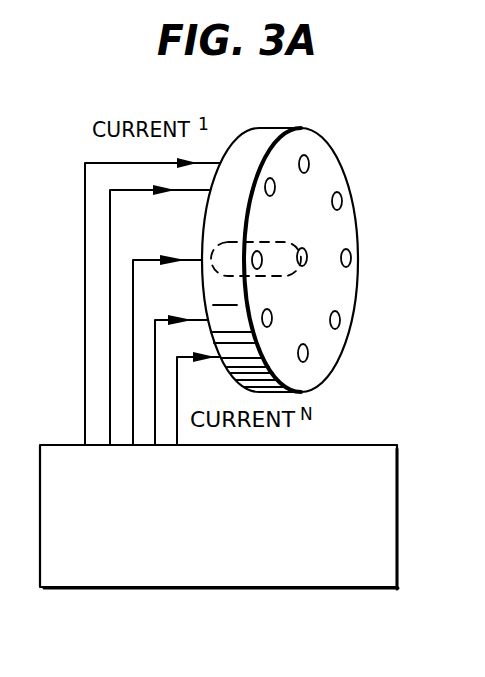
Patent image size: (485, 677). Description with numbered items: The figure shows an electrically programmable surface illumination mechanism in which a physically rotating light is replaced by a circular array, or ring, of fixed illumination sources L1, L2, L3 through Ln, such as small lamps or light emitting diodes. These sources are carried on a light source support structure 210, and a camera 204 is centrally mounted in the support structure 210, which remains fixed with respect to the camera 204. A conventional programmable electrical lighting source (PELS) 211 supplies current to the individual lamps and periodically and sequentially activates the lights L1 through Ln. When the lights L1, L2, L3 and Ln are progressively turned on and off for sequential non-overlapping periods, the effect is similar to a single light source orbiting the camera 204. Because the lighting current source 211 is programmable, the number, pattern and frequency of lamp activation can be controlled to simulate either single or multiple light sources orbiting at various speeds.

The fixed illumination source Ln is at (271, 180).
The fixed illumination source L1 is at (308, 162).
The fixed illumination source L2 is at (341, 200).
The fixed illumination source L3 is at (350, 258).
The camera 204 is at (308, 255).
The support structure 210 is at (333, 347).
The programmable electrical lighting source (PELS) 211 is at (64, 445).